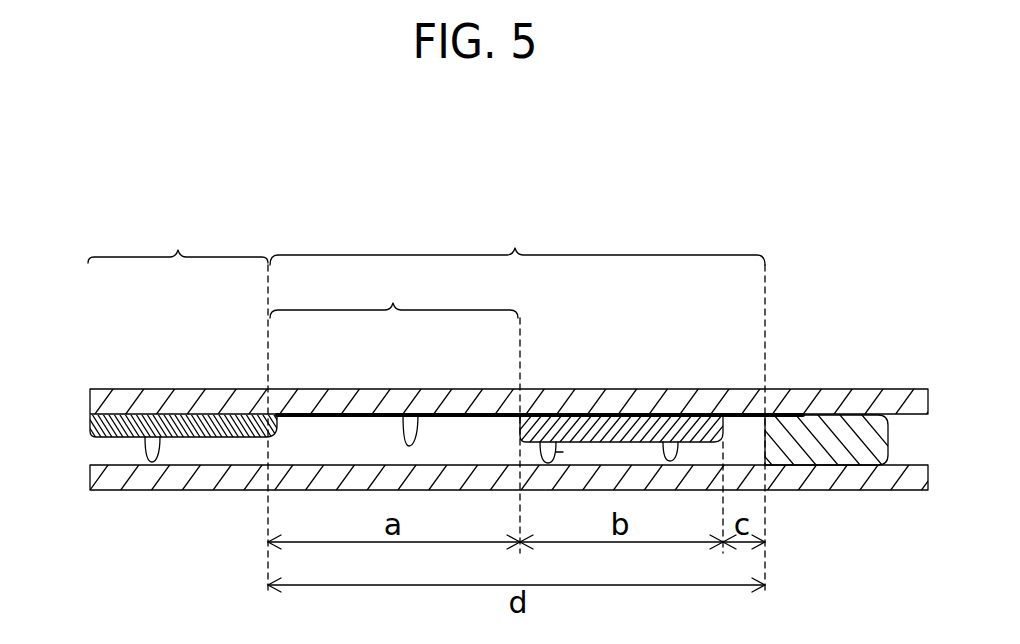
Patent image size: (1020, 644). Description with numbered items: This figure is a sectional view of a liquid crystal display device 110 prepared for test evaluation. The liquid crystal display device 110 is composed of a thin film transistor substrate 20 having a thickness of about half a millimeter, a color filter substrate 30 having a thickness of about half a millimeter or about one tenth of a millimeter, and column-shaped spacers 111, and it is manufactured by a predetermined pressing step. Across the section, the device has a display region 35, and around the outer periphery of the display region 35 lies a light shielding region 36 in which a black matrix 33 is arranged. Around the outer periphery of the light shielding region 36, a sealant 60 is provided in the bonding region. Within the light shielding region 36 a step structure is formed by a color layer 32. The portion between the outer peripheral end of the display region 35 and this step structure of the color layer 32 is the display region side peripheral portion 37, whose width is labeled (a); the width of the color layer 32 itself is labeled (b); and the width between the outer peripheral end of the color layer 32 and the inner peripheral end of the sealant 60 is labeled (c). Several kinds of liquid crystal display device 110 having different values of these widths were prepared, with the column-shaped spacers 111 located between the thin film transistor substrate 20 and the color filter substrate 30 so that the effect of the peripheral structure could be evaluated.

The liquid crystal display device 110 is at (527, 187).
The thin film transistor substrate 20 is at (905, 480).
The color filter substrate 30 is at (832, 392).
The color layer 32 is at (90, 418).
The black matrix 33 is at (750, 422).
The display region 35 is at (178, 238).
The light shielding region 36 is at (517, 237).
The display region side peripheral portion 37 is at (394, 295).
The sealant 60 is at (833, 455).
The column-shaped spacers 111 is at (152, 462).